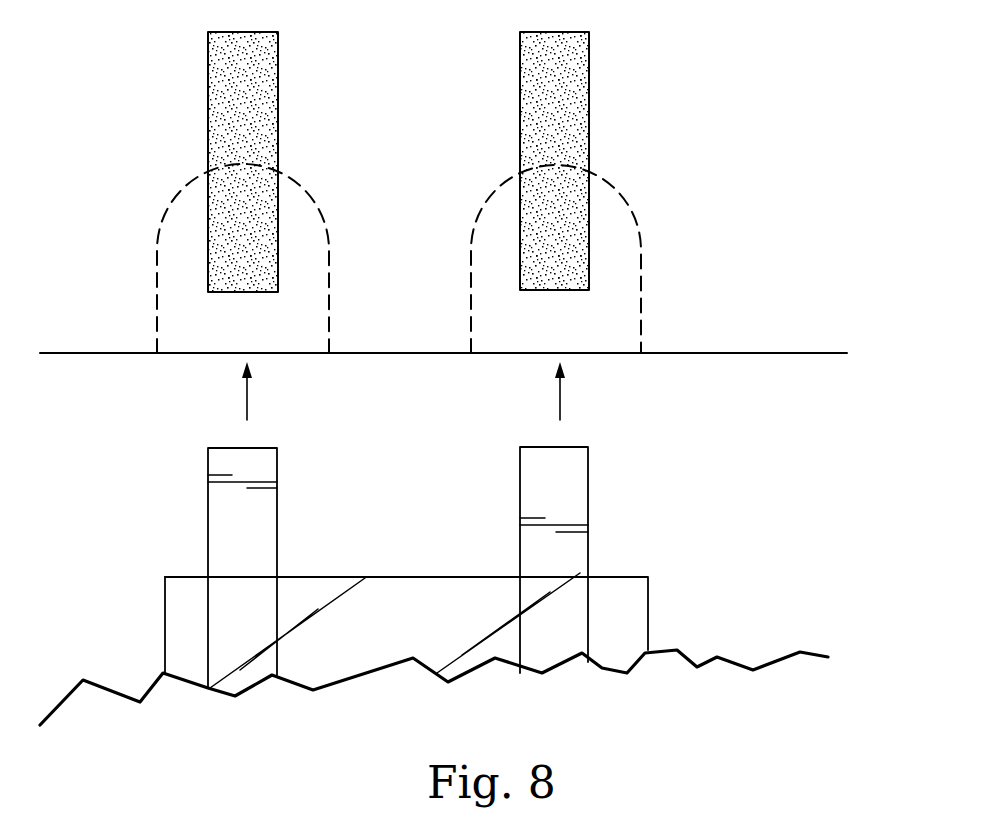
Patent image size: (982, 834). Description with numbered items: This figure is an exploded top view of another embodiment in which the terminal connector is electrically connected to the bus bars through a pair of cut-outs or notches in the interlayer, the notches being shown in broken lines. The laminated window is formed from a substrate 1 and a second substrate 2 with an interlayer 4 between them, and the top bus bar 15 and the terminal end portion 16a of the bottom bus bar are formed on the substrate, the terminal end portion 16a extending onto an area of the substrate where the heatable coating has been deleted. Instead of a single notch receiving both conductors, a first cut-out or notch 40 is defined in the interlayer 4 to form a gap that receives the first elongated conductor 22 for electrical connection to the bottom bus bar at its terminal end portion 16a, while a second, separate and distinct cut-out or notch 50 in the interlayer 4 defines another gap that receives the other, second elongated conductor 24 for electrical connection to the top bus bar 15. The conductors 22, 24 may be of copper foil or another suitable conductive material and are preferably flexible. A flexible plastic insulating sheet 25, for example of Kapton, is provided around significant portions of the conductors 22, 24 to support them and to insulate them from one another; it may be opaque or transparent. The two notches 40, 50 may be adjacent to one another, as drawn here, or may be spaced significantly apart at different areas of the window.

The substrate 1 is at (453, 347).
The substrate 2 is at (453, 347).
The interlayer 4 is at (755, 295).
The top bus bar 15 is at (257, 120).
The terminal end portion of bottom bus bar 16a is at (565, 228).
The second cut-out or notch 50 is at (320, 212).
The first cut-out or notch 40 is at (640, 253).
The first elongated conductor 22 is at (577, 483).
The second elongated conductor 24 is at (260, 527).
The flexible plastic insulating sheet 25 is at (188, 610).